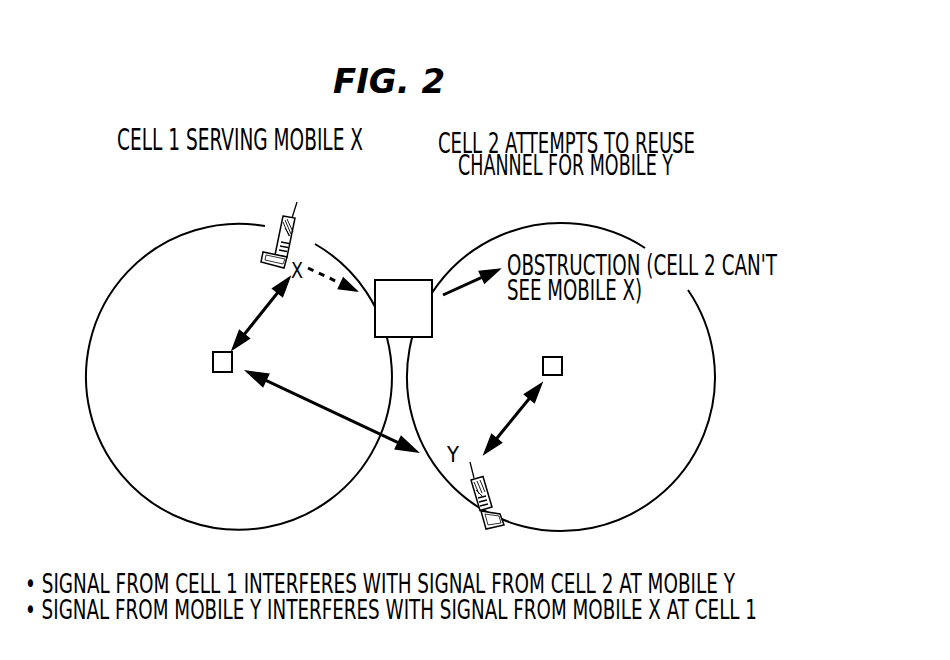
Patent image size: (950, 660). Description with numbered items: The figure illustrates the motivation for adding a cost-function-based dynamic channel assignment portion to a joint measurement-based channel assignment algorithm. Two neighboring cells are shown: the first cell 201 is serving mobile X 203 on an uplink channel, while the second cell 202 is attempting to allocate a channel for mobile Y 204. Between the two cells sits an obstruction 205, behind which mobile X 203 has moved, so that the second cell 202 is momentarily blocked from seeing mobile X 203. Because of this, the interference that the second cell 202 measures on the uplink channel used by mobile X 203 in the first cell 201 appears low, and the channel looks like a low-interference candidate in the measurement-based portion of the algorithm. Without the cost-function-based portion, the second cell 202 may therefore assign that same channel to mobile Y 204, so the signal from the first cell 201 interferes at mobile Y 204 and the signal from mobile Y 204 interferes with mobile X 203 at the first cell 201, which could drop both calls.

The Cell 1 201 is at (213, 362).
The Cell 2 202 is at (562, 366).
The mobile X 203 is at (296, 238).
The mobile Y 204 is at (473, 500).
The obstruction 205 is at (402, 280).